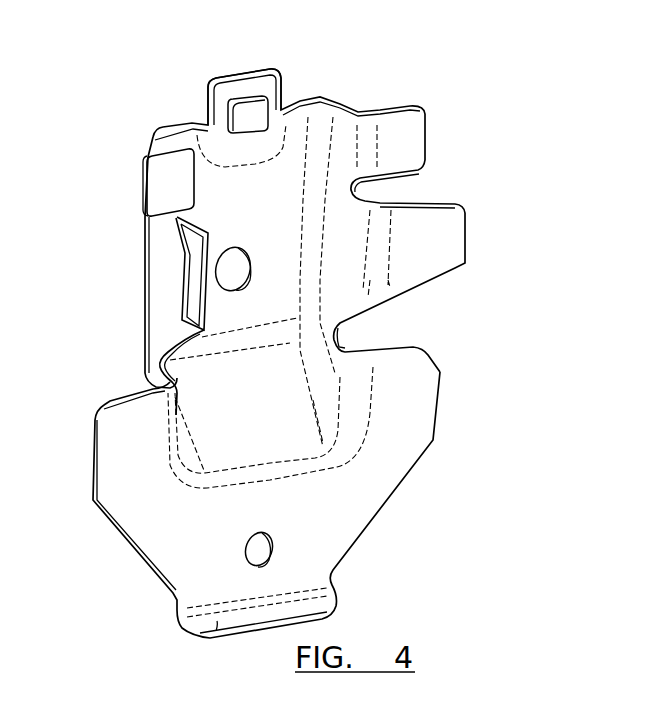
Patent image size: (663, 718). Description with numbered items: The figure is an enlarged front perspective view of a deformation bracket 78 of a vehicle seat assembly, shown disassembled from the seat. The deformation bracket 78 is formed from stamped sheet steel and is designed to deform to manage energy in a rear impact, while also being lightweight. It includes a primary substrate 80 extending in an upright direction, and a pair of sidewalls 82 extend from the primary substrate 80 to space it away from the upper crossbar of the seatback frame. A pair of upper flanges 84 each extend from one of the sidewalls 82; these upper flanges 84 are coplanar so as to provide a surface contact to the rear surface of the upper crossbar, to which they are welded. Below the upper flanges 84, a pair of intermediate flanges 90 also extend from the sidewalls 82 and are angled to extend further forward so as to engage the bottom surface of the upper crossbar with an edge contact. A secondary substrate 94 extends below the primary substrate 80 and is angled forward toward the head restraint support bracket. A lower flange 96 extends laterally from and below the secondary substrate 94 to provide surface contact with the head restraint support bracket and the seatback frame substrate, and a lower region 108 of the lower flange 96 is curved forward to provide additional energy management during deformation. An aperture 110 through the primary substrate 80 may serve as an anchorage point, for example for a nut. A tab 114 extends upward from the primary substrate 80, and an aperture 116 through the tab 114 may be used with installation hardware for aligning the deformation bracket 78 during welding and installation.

The deformation bracket 78 is at (466, 60).
The primary substrate 80 is at (285, 157).
The sidewall 82 is at (162, 260).
The upper flange 84 is at (160, 185).
The intermediate flange 90 is at (193, 290).
The secondary substrate 94 is at (222, 385).
The lower flange 96 is at (398, 447).
The lower region 108 is at (215, 622).
The aperture 110 is at (230, 262).
The tab 114 is at (217, 100).
The aperture 116 is at (240, 132).